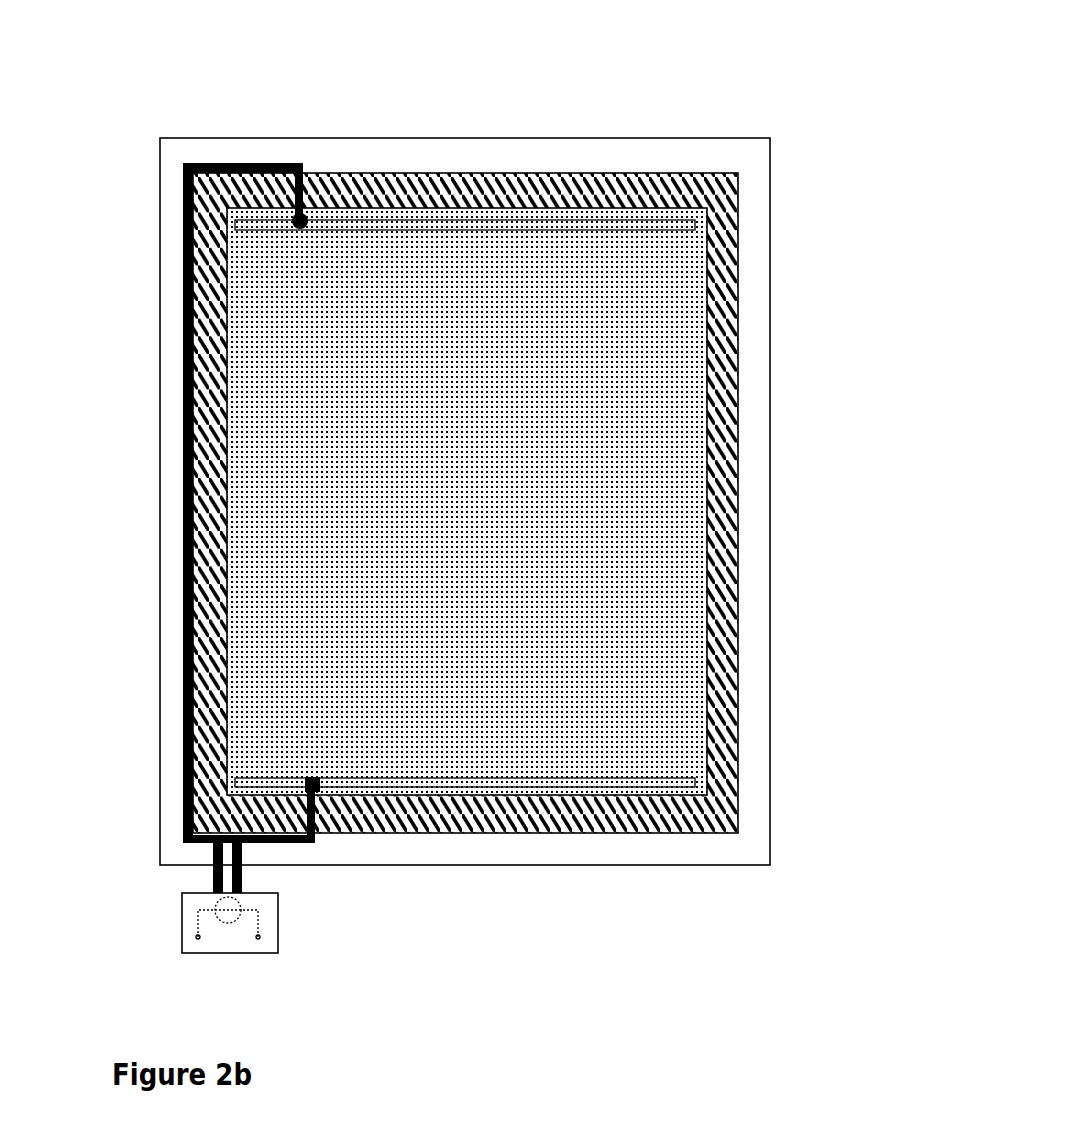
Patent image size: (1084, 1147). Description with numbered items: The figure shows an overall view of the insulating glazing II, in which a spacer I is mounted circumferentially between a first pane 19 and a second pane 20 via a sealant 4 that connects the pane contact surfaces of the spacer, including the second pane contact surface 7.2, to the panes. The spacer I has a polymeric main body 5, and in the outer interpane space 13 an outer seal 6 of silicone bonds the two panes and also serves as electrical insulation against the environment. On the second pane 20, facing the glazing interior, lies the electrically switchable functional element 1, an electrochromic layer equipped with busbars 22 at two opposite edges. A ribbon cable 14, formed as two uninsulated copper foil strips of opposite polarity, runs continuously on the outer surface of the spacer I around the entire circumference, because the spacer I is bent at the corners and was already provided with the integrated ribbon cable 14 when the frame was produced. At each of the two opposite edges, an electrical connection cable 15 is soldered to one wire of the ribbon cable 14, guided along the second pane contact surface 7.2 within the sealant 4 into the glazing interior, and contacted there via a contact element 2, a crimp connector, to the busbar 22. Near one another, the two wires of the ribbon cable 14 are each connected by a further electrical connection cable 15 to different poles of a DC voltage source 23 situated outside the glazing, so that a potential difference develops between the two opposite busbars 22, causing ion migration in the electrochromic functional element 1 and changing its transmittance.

The insulating glazing II is at (219, 104).
The spacer I is at (574, 503).
The electrically switchable functional element 1 is at (670, 287).
The contact element 2 is at (296, 222).
The sealant 4 is at (725, 442).
The polymeric main body 5 is at (574, 503).
The outer seal 6 is at (175, 488).
The second pane contact surface 7.2 is at (574, 503).
The outer interpane space 13 is at (179, 503).
The ribbon cable 14 is at (180, 795).
The electrical connection cable 15 is at (307, 180).
The first pane 19 is at (551, 501).
The second pane 20 is at (770, 378).
The busbar 22 is at (563, 222).
The voltage source 23 is at (182, 917).